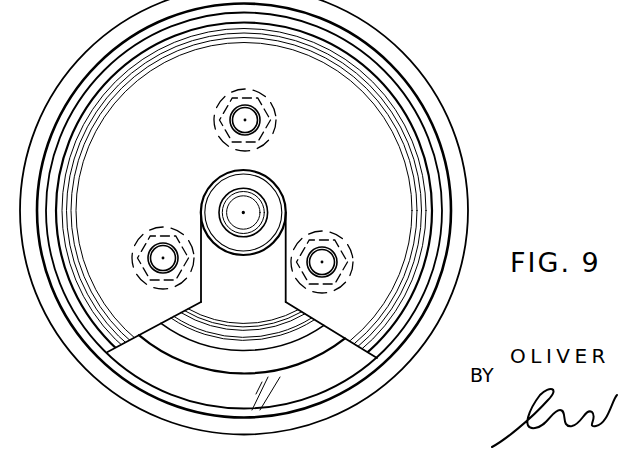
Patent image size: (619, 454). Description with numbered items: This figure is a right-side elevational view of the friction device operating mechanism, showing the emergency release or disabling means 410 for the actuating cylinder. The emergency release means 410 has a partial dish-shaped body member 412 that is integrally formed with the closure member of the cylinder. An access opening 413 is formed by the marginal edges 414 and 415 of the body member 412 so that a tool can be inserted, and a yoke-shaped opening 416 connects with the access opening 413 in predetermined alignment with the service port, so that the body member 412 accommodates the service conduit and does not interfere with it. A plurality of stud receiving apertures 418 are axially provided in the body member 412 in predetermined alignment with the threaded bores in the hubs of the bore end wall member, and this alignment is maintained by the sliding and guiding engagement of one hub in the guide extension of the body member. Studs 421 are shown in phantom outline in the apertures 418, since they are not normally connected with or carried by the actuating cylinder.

The emergency release means 410 is at (86, 46).
The body member 412 is at (173, 176).
The access opening 413 is at (219, 350).
The marginal edge 414 is at (190, 310).
The marginal edge 415 is at (348, 347).
The yoke-shaped opening 416 is at (202, 275).
The stud receiving apertures 418 is at (258, 123).
The studs 421 is at (268, 99).